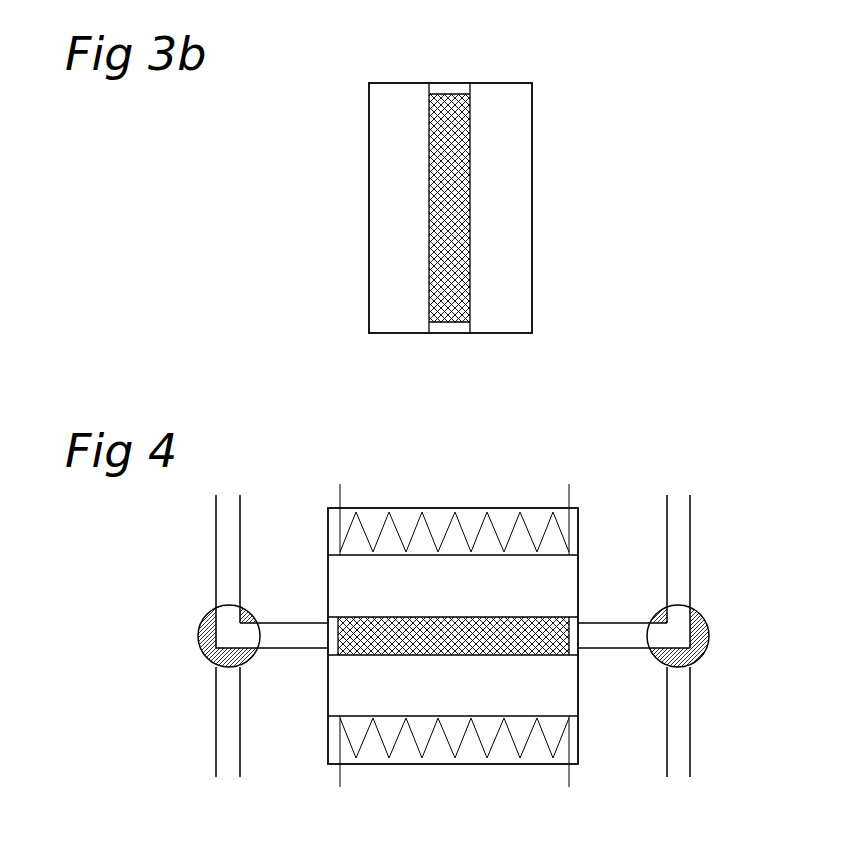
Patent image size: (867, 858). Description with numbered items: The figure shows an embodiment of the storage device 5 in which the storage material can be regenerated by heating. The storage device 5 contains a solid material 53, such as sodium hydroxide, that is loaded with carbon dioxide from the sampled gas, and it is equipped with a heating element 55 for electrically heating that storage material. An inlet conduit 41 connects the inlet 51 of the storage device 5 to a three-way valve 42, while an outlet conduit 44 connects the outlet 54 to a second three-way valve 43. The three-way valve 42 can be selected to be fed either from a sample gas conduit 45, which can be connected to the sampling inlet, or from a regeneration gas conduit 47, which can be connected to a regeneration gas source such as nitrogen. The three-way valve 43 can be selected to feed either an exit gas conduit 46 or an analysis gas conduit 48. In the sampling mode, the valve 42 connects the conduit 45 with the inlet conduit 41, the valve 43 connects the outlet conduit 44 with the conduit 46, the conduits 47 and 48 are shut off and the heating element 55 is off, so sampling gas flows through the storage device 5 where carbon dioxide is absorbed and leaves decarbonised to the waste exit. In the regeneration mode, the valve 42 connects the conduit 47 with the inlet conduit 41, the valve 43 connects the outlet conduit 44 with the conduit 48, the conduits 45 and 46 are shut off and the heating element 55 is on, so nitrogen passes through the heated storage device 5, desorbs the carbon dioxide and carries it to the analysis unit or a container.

In FIG. 3B, the storage device 5 is at (502, 60).
In FIG. 4, the storage device 5 is at (424, 692).
In FIG. 3B, the inlet 51 is at (443, 334).
In FIG. 4, the inlet 51 is at (327, 642).
In FIG. 3B, the solid material 53 is at (452, 258).
In FIG. 4, the solid material 53 is at (453, 636).
In FIG. 3B, the outlet 54 is at (443, 90).
In FIG. 4, the outlet 54 is at (575, 624).
In FIG. 4, the heating element 55 is at (432, 513).
In FIG. 4, the inlet conduit 41 is at (289, 634).
In FIG. 4, the three-way valve 42 is at (203, 658).
In FIG. 4, the three-way valve 43 is at (710, 643).
In FIG. 4, the outlet conduit 44 is at (611, 637).
In FIG. 4, the sample gas conduit 45 is at (229, 812).
In FIG. 4, the exit gas conduit 46 is at (678, 812).
In FIG. 4, the regeneration gas conduit 47 is at (229, 503).
In FIG. 4, the analysis gas conduit 48 is at (678, 465).